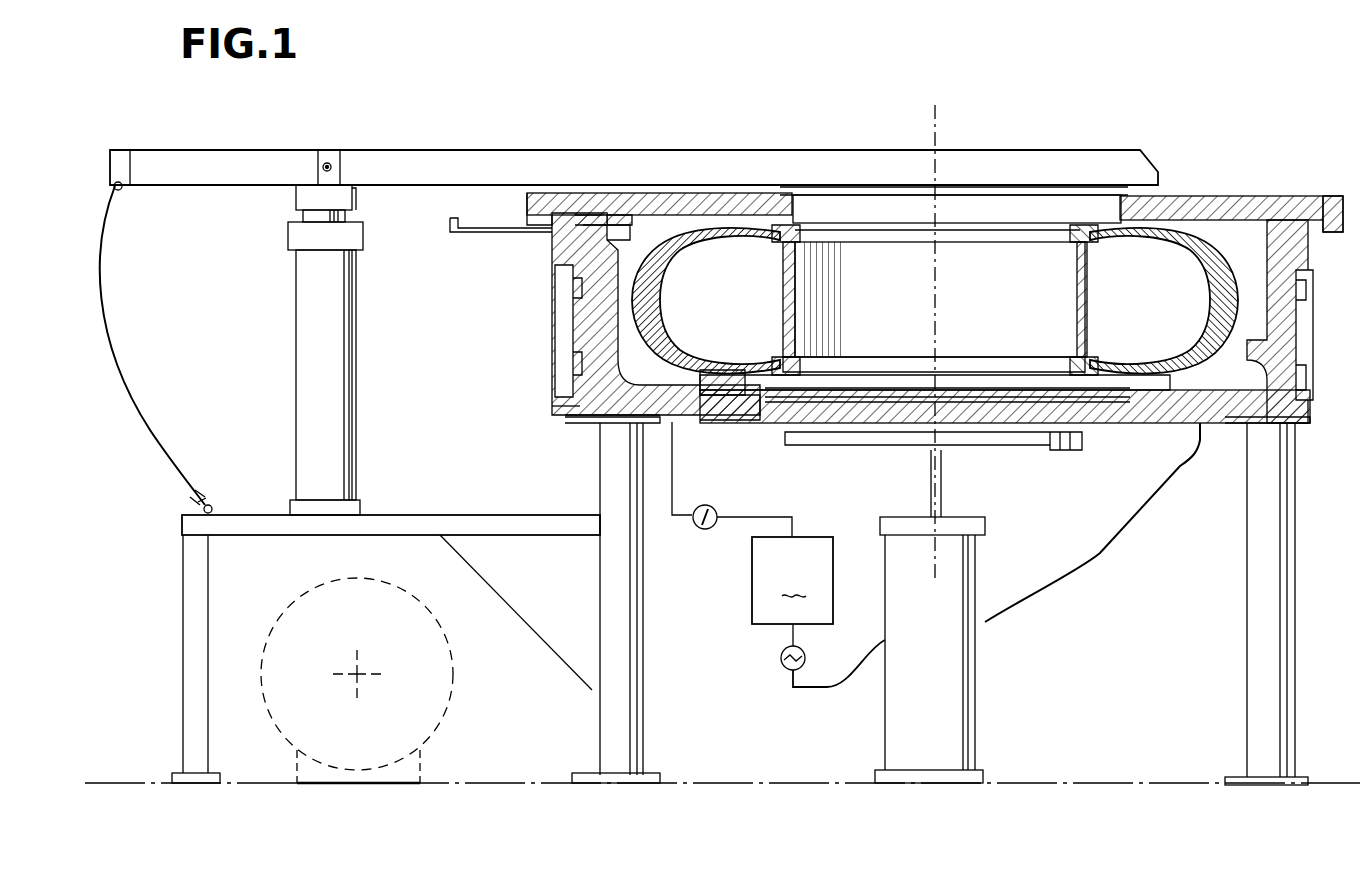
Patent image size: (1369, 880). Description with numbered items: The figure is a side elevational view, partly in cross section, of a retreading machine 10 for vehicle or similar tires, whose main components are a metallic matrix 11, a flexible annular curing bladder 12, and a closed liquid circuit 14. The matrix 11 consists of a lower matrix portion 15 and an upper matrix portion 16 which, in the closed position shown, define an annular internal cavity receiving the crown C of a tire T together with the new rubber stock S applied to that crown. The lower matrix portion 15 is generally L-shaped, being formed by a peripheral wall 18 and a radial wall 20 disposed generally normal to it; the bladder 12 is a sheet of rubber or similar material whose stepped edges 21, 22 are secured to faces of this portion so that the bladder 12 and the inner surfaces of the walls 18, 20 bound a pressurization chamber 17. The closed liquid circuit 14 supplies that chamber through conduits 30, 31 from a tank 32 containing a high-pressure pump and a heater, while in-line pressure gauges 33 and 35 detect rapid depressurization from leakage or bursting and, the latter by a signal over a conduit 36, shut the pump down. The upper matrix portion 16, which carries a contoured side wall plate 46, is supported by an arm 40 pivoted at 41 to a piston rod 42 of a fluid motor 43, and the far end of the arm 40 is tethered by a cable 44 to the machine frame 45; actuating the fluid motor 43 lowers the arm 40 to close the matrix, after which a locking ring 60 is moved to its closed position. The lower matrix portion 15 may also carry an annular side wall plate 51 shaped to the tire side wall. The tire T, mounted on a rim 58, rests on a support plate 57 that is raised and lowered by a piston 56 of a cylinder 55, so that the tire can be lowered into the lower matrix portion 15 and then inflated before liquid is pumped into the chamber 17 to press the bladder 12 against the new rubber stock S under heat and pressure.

The retreading machine 10 is at (812, 126).
The matrix 11 is at (1297, 196).
The flexible annular curing bladder 12 is at (552, 408).
The closed liquid circuit 14 is at (766, 692).
The lower matrix portion 15 is at (602, 416).
The upper matrix portion 16 is at (660, 200).
The pressurization chamber 17 is at (615, 325).
The peripheral wall 18 is at (575, 314).
The radial wall 20 is at (628, 417).
The bladder edge 21 is at (590, 196).
The bladder edge 22 is at (732, 420).
The conduit 30 is at (674, 478).
The conduit 31 is at (1118, 547).
The tank 32 is at (792, 580).
The in-line pressure gauge 33 is at (702, 531).
The in-line pressure gauge 35 is at (804, 660).
The conduit 36 is at (792, 640).
The arm 40 is at (1030, 160).
The pivot 41 is at (340, 165).
The piston rod 42 is at (296, 198).
The fluid motor 43 is at (332, 390).
The cable 44 is at (132, 382).
The frame 45 is at (240, 535).
The side wall plate 46 is at (703, 228).
The annular side wall plate 51 is at (850, 378).
The cylinder 55 is at (952, 656).
The piston 56 is at (946, 487).
The support plate 57 is at (1048, 448).
The rim 58 is at (947, 294).
The locking ring 60 is at (515, 196).
The tire T is at (786, 202).
The crown C is at (668, 262).
The new rubber stock S is at (660, 298).